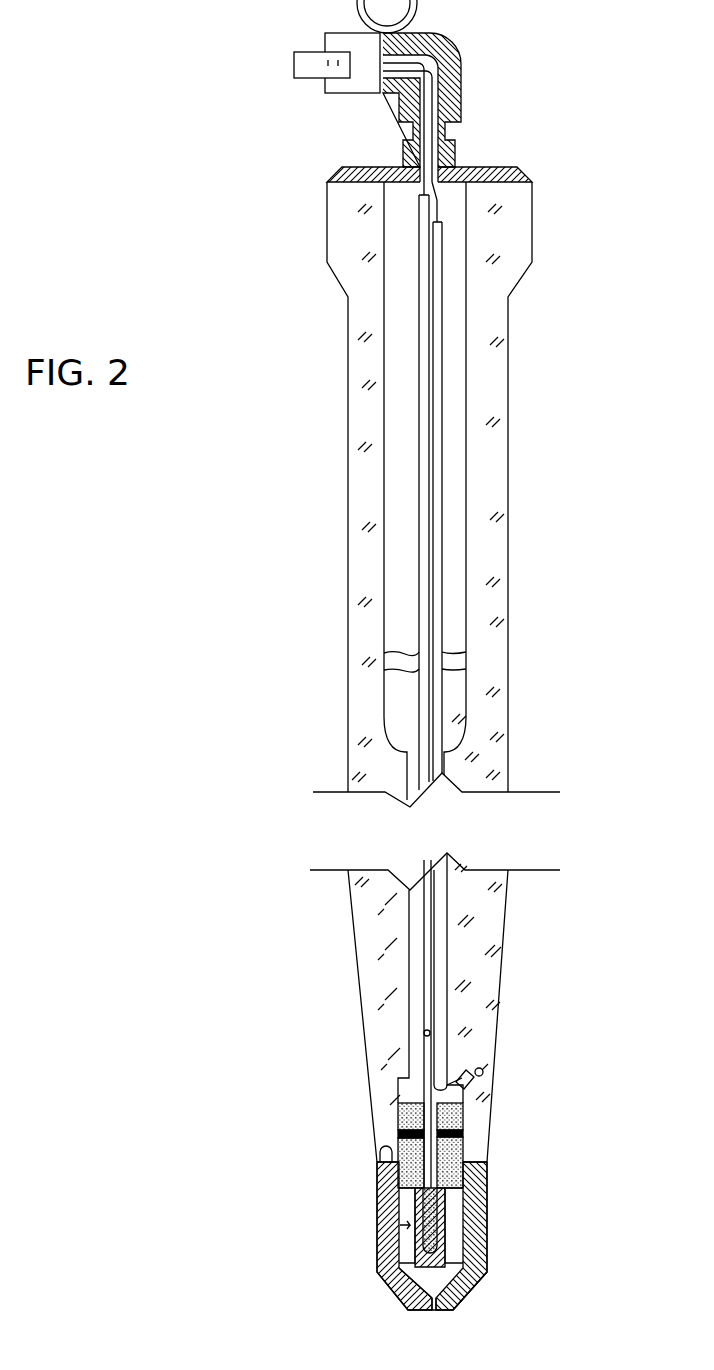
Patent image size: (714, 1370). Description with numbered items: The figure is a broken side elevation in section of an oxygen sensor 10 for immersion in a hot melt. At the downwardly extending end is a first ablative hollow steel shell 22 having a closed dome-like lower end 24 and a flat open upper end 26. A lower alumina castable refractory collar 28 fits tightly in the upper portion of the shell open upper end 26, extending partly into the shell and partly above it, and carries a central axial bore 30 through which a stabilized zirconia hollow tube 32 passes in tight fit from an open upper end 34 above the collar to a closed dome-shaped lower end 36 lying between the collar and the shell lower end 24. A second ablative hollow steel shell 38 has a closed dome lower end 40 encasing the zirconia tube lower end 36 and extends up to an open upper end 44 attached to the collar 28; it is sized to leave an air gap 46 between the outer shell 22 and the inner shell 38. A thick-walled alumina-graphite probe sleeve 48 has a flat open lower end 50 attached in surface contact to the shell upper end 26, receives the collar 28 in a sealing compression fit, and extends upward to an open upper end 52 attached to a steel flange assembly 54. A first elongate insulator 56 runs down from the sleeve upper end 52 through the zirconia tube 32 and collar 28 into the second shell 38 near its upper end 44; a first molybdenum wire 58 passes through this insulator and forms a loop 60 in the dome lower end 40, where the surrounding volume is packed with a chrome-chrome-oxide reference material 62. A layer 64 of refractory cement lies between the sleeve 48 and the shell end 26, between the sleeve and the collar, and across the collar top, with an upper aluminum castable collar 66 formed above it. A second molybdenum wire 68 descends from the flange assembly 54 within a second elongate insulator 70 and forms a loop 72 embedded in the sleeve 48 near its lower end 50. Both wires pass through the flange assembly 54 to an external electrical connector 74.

The oxygen probe assembly 10 is at (545, 438).
The first ablative hollow shell 22 is at (488, 1265).
The closed dome-like lower end 24 is at (478, 1295).
The flat open upper end 26 is at (380, 1152).
The lower alumina castable refractory collar 28 is at (465, 1155).
The central axial bore 30 is at (398, 1115).
The stabilized zirconia hollow tube 32 is at (425, 1055).
The open upper end 34 is at (424, 1035).
The closed dome-shaped lower end 36 is at (487, 1250).
The second ablative hollow shell 38 is at (400, 1262).
The closed dome lower end 40 is at (428, 1300).
The open upper end 44 is at (378, 1180).
The air gap 46 is at (395, 1248).
The probe sleeve 48 is at (497, 1010).
The flat open lower end 50 is at (485, 1185).
The open upper end 52 is at (458, 183).
The steel flange assembly 54 is at (480, 167).
The first elongate insulator 56 is at (419, 577).
The first molybdenum wire 58 is at (385, 1215).
The loop 60 is at (412, 1282).
The chrome-chrome-oxide reference material 62 is at (437, 1245).
The layer of refractory cement 64 is at (455, 1120).
The upper aluminum castable collar 66 is at (400, 1133).
The second molybdenum wire 68 is at (480, 1068).
The second elongate insulator 70 is at (442, 585).
The loop 72 is at (484, 1072).
The external electrical connector 74 is at (348, 97).